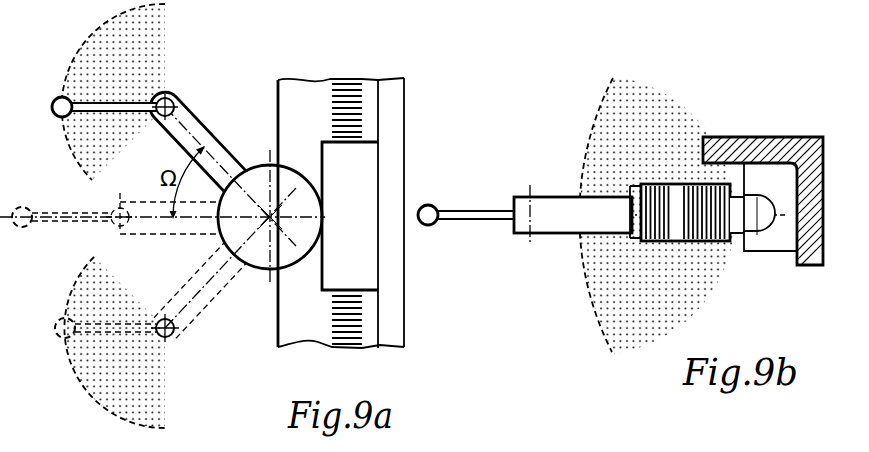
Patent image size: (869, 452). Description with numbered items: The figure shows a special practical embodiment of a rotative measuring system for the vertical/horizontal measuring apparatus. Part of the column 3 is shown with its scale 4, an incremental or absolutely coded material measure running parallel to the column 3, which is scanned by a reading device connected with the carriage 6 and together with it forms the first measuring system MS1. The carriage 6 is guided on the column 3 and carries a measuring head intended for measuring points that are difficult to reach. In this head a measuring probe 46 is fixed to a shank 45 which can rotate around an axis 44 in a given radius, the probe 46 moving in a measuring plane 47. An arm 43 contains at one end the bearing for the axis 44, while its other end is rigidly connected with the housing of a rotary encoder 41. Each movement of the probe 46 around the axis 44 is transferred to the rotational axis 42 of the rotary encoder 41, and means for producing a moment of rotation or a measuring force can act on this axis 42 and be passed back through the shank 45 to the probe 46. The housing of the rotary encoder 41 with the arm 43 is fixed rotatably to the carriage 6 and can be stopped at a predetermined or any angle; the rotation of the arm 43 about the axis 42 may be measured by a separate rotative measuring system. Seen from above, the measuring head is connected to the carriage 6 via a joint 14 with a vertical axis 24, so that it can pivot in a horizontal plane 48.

In FIG. 9A, the column 3 is at (396, 303).
In FIG. 9B, the column 3 is at (800, 136).
In FIG. 9A, the scale 4 is at (358, 112).
In FIG. 9A, the carriage 6 is at (368, 158).
In FIG. 9B, the carriage 6 is at (790, 247).
In FIG. 9B, the joint 14 is at (740, 240).
In FIG. 9B, the vertical axis 24 is at (763, 226).
In FIG. 9A, the rotary encoder 41 is at (257, 274).
In FIG. 9B, the rotary encoder 41 is at (668, 246).
In FIG. 9A, the rotational axis 42 is at (266, 210).
In FIG. 9B, the rotational axis 42 is at (682, 246).
In FIG. 9A, the arm 43 is at (205, 128).
In FIG. 9B, the arm 43 is at (553, 234).
In FIG. 9A, the axis 44 is at (172, 98).
In FIG. 9B, the axis 44 is at (530, 193).
In FIG. 9A, the shank 45 is at (131, 112).
In FIG. 9B, the shank 45 is at (470, 211).
In FIG. 9A, the measuring probe 46 is at (56, 100).
In FIG. 9B, the measuring probe 46 is at (438, 222).
In FIG. 9A, the measuring plane 47 is at (150, 30).
In FIG. 9B, the horizontal plane 48 is at (620, 322).
In FIG. 9A, the first measuring system MS1 is at (372, 136).